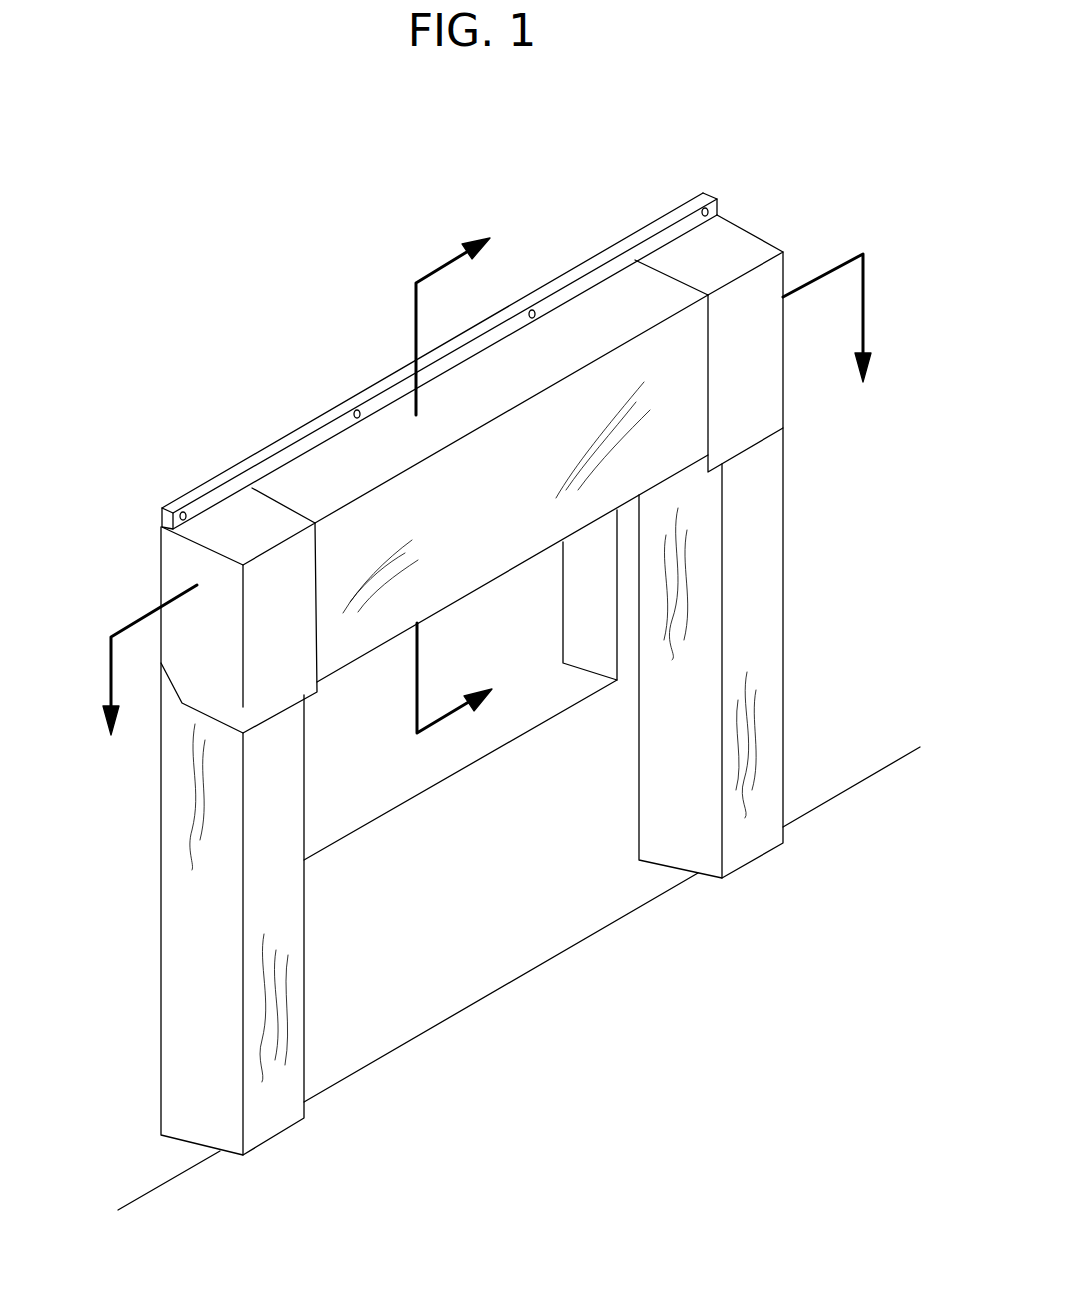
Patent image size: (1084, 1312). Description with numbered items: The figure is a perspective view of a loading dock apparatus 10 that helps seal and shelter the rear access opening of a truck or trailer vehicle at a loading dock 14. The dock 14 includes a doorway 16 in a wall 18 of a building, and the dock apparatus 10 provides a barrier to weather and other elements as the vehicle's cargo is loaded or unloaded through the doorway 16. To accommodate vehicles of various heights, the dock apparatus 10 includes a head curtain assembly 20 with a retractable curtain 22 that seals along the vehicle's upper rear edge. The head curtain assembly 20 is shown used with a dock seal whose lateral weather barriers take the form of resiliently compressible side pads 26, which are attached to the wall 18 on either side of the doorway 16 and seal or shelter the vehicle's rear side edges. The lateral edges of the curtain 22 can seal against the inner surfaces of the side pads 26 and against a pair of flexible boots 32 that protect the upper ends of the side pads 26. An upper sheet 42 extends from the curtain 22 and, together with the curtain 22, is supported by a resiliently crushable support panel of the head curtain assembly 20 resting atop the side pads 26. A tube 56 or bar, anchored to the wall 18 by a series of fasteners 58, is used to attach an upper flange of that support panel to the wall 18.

The loading dock apparatus 10 is at (188, 270).
The loading dock 14 is at (548, 900).
The doorway 16 is at (378, 786).
The wall 18 is at (833, 747).
The head curtain assembly 20 is at (134, 583).
The retractable curtain 22 is at (357, 628).
The side pads 26 is at (755, 590).
The flexible boots 32 is at (228, 528).
The upper sheet 42 is at (387, 437).
The tube 56 is at (285, 445).
The fasteners 58 is at (538, 317).